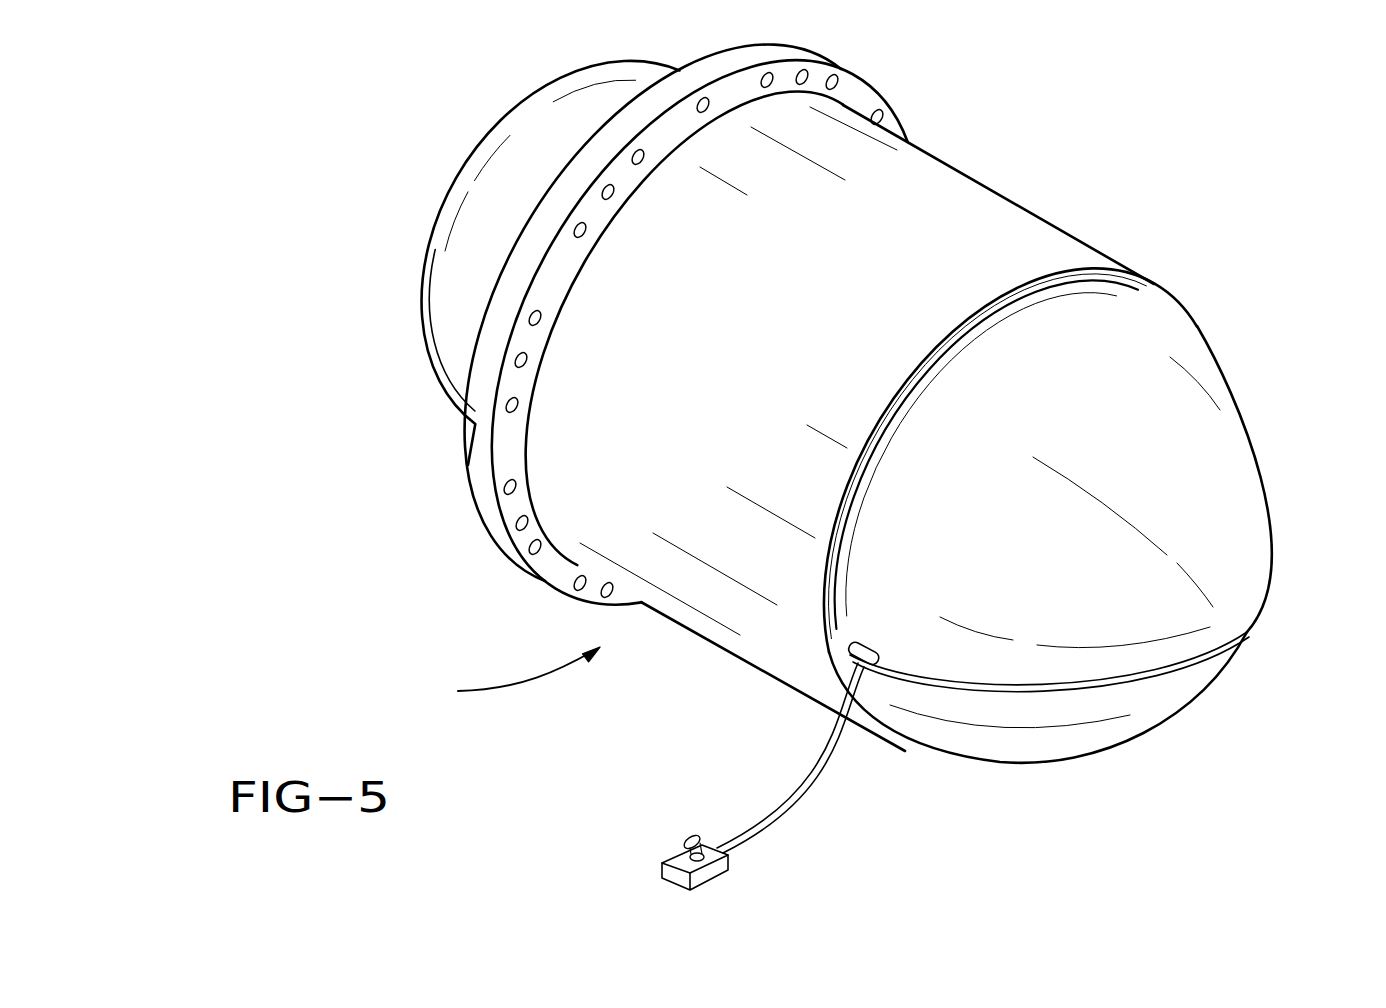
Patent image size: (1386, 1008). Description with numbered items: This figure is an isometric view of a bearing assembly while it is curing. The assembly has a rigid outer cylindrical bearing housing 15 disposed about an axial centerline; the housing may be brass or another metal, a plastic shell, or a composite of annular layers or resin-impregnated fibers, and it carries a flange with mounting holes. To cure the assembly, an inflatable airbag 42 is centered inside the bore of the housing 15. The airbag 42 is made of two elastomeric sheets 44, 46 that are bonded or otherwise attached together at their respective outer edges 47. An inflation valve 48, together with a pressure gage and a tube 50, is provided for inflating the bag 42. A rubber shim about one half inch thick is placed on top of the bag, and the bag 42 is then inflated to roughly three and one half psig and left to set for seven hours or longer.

The outer cylindrical bearing housing 15 is at (985, 207).
The inflatable airbag 42 is at (510, 676).
The elastomeric sheet 44 is at (1190, 408).
The elastomeric sheet 46 is at (1118, 722).
The outer edges 47 is at (1244, 634).
The inflation valve 48 is at (672, 858).
The tube 50 is at (772, 816).